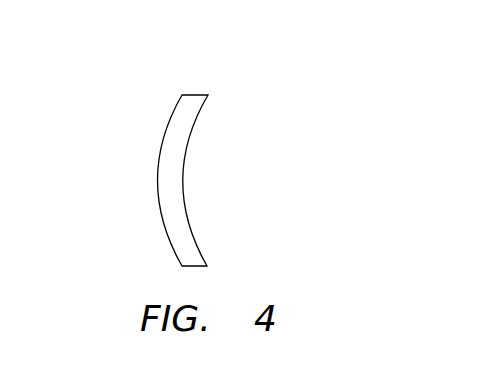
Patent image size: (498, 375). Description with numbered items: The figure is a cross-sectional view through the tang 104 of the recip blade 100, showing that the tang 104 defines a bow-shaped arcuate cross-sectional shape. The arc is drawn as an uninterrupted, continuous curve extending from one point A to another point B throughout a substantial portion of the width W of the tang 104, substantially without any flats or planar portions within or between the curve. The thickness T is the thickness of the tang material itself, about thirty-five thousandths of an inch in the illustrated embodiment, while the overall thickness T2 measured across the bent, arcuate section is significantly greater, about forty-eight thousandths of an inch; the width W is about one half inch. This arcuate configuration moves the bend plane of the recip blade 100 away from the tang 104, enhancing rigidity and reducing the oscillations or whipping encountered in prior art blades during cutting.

The recip blade 100 is at (290, 107).
The tang 104 is at (164, 197).
The point A is at (182, 95).
The point B is at (182, 266).
The thickness T is at (157, 73).
The overall thickness T2 is at (157, 150).
The width W is at (212, 95).